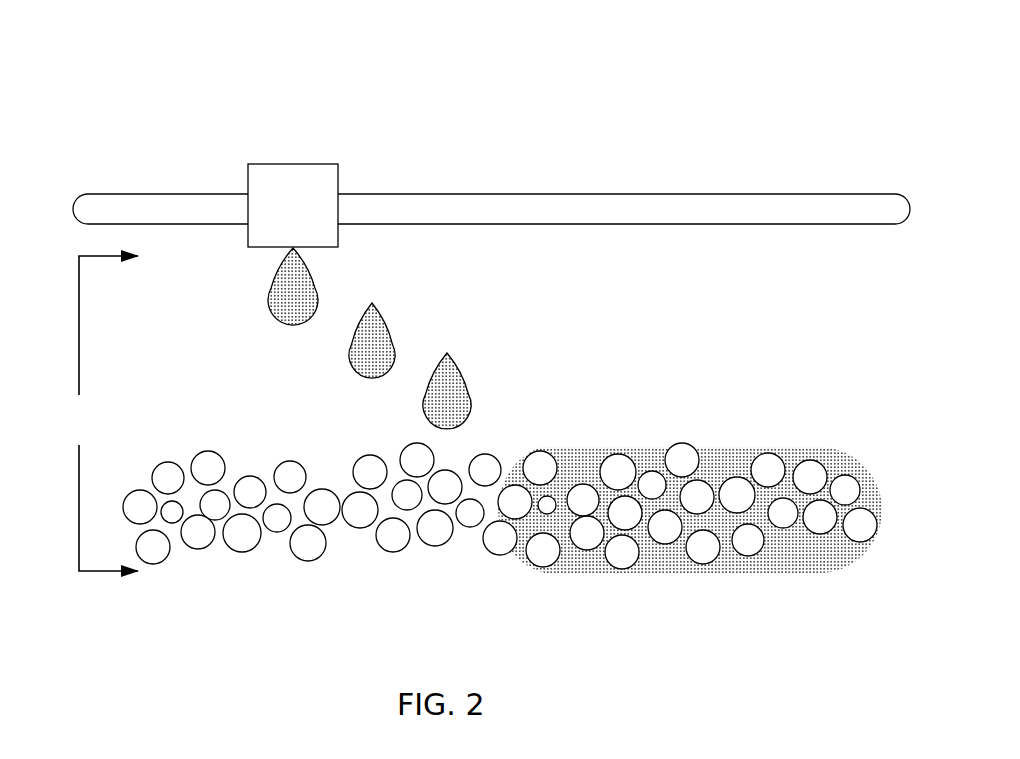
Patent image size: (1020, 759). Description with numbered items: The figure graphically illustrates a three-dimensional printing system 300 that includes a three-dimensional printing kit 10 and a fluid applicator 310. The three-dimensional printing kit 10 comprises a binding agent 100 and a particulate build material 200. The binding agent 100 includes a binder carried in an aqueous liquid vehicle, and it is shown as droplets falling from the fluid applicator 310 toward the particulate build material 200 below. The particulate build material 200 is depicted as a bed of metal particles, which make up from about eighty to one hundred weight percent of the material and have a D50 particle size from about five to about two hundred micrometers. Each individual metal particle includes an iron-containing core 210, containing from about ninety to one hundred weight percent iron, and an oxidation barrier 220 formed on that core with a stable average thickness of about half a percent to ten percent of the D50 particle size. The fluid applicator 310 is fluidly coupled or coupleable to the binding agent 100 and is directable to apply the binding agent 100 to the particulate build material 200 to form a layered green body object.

The three-dimensional printing kit 10 is at (93, 432).
The binding agent 100 is at (392, 320).
The particulate build material 200 is at (280, 450).
The iron-containing core 210 is at (310, 547).
The oxidation barrier 220 is at (450, 537).
The three-dimensional printing system 300 is at (195, 80).
The fluid applicator 310 is at (314, 218).